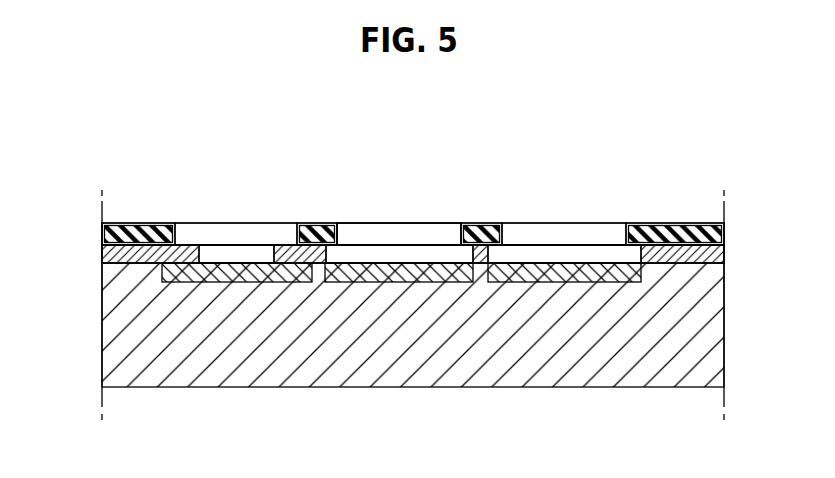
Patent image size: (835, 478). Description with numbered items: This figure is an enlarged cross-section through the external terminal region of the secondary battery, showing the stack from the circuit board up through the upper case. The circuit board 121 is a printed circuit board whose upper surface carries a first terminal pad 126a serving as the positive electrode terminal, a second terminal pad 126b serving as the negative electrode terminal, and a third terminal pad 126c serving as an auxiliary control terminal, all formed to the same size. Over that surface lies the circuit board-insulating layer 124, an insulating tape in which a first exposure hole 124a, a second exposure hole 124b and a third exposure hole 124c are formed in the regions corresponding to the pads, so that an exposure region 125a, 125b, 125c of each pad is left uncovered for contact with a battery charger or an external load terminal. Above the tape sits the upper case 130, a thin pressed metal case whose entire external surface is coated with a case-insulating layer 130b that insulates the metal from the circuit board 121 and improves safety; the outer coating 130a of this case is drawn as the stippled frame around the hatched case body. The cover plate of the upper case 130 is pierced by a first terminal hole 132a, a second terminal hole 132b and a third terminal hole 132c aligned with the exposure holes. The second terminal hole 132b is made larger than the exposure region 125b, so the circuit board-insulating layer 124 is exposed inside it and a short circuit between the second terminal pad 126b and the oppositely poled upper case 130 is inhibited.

The circuit board 121 is at (114, 318).
The circuit board-insulating layer 124 is at (102, 251).
The first exposure hole 124a is at (488, 252).
The second exposure hole 124b is at (207, 252).
The third exposure hole 124c is at (327, 252).
The exposure region of first terminal pad 125a is at (568, 262).
The exposure region of second terminal pad 125b is at (239, 258).
The exposure region of third terminal pad 125c is at (402, 260).
The first terminal pad 126a is at (612, 277).
The second terminal pad 126b is at (208, 277).
The third terminal pad 126c is at (433, 277).
The upper case 130 is at (724, 229).
The seed layer of conductive layer 130a is at (690, 223).
The case-insulating layer 130b is at (648, 224).
The first terminal hole 132a is at (502, 234).
The second terminal hole 132b is at (297, 236).
The third terminal hole 132c is at (363, 232).